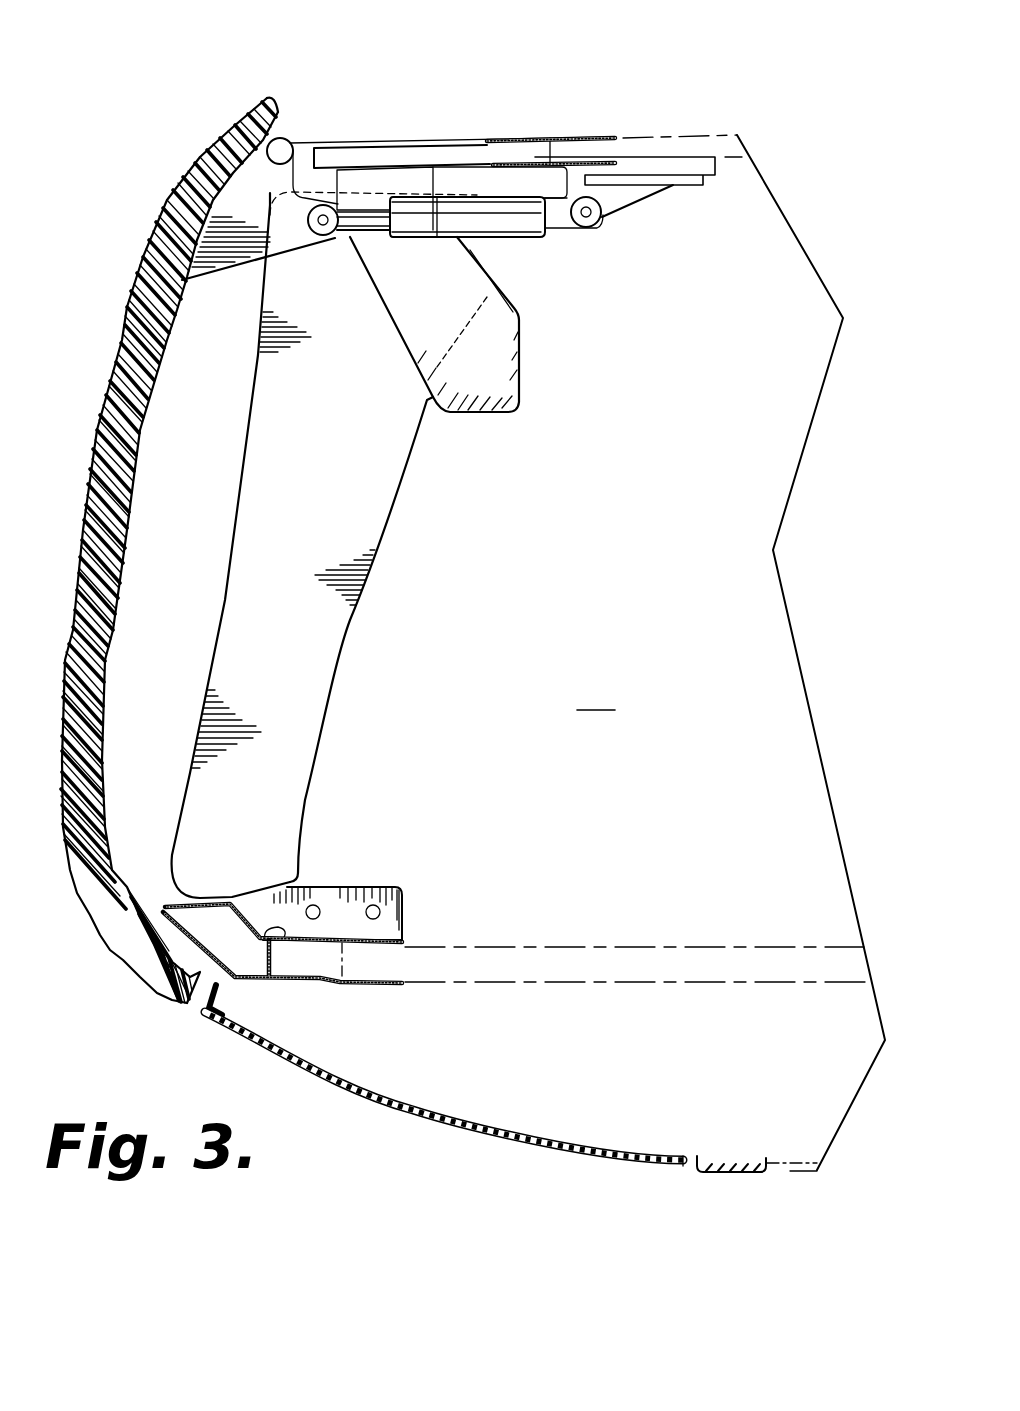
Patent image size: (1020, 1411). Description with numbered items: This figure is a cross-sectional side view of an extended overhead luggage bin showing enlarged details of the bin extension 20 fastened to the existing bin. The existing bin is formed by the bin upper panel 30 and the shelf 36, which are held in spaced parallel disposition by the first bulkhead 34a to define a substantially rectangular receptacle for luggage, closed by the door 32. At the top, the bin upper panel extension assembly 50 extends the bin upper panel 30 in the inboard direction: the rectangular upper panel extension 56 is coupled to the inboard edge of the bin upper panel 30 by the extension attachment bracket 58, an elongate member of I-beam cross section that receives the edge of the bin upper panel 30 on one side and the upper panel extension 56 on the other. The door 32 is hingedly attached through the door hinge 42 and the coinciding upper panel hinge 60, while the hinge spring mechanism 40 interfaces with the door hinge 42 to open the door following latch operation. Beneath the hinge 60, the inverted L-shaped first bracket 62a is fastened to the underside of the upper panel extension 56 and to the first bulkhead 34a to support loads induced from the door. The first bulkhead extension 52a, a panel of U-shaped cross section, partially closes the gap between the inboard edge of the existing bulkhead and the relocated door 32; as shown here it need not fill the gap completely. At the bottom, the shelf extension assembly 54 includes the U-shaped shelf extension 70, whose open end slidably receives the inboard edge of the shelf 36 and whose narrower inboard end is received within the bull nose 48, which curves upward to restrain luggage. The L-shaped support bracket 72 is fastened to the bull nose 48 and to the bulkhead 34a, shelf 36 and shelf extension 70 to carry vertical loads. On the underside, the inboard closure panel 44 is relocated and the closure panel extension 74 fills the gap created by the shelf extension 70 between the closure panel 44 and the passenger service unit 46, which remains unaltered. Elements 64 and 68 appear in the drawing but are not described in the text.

The bin extension 20 is at (200, 124).
The bin upper panel 30 is at (683, 133).
The door 32 is at (133, 293).
The first bulkhead 34a is at (398, 545).
The shelf 36 is at (682, 982).
The hinge spring mechanism 40 is at (513, 238).
The door hinge 42 is at (287, 225).
The inboard closure panel 44 is at (437, 1122).
The passenger service unit 46 is at (798, 1173).
The bull nose 48 is at (153, 917).
The bin upper panel extension assembly 50 is at (464, 88).
The first bulkhead extension 52a is at (400, 490).
The shelf extension assembly 54 is at (406, 900).
The upper panel extension 56 is at (596, 154).
The extension attachment bracket 58 is at (596, 137).
The upper panel hinge 60 is at (292, 136).
The first bracket 62a is at (510, 390).
The hinge plate 64 is at (355, 143).
The seal tip 68 is at (257, 108).
The shelf extension 70 is at (388, 983).
The support bracket 72 is at (353, 887).
The closure panel extension 74 is at (733, 1175).